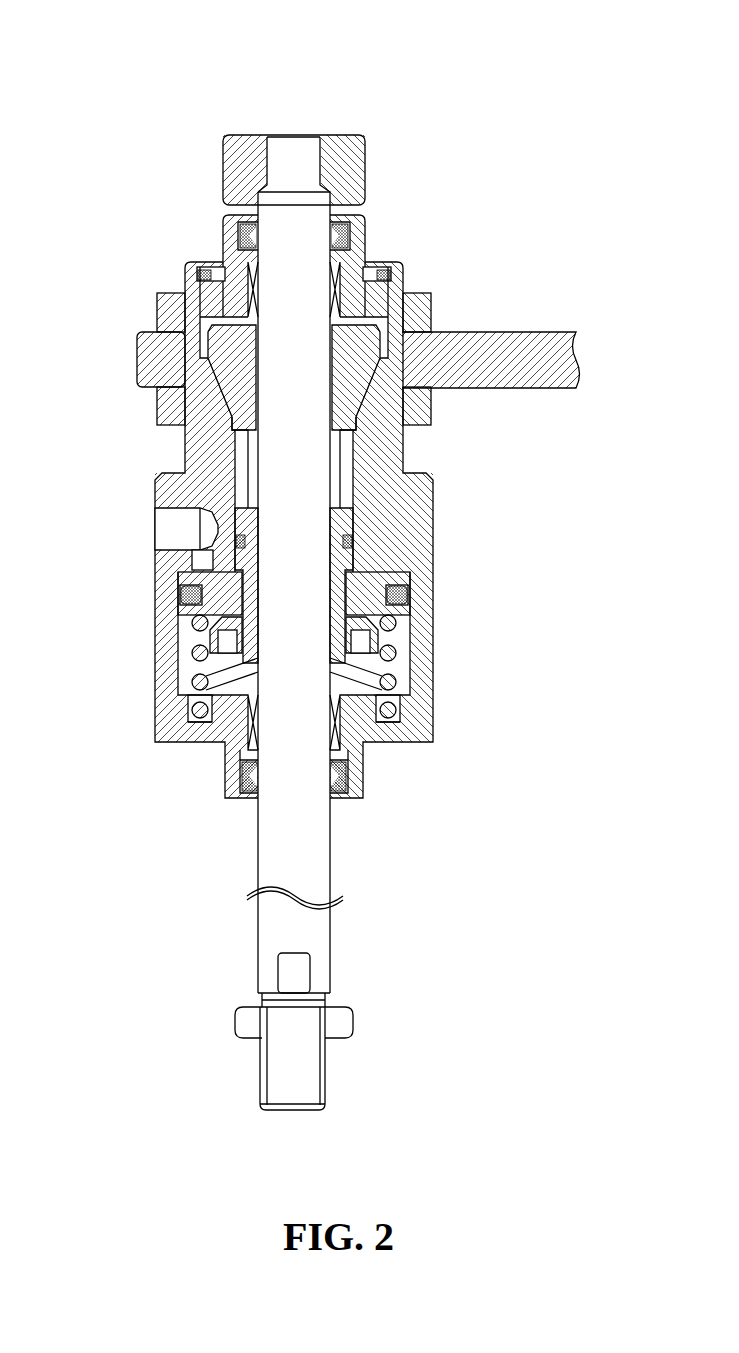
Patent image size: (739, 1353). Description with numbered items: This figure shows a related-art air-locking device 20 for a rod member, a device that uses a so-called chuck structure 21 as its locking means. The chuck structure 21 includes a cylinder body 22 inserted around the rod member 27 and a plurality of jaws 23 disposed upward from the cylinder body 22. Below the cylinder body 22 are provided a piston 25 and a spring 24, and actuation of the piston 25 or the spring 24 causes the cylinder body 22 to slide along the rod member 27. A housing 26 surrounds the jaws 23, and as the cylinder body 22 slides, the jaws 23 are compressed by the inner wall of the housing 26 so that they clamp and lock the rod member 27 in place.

The device 20 is at (330, 573).
The chuck structure 21 is at (393, 494).
The cylinder body 22 is at (347, 522).
The jaws 23 is at (356, 384).
The spring 24 is at (396, 679).
The piston 25 is at (215, 593).
The housing 26 is at (440, 598).
The rod member 27 is at (310, 842).